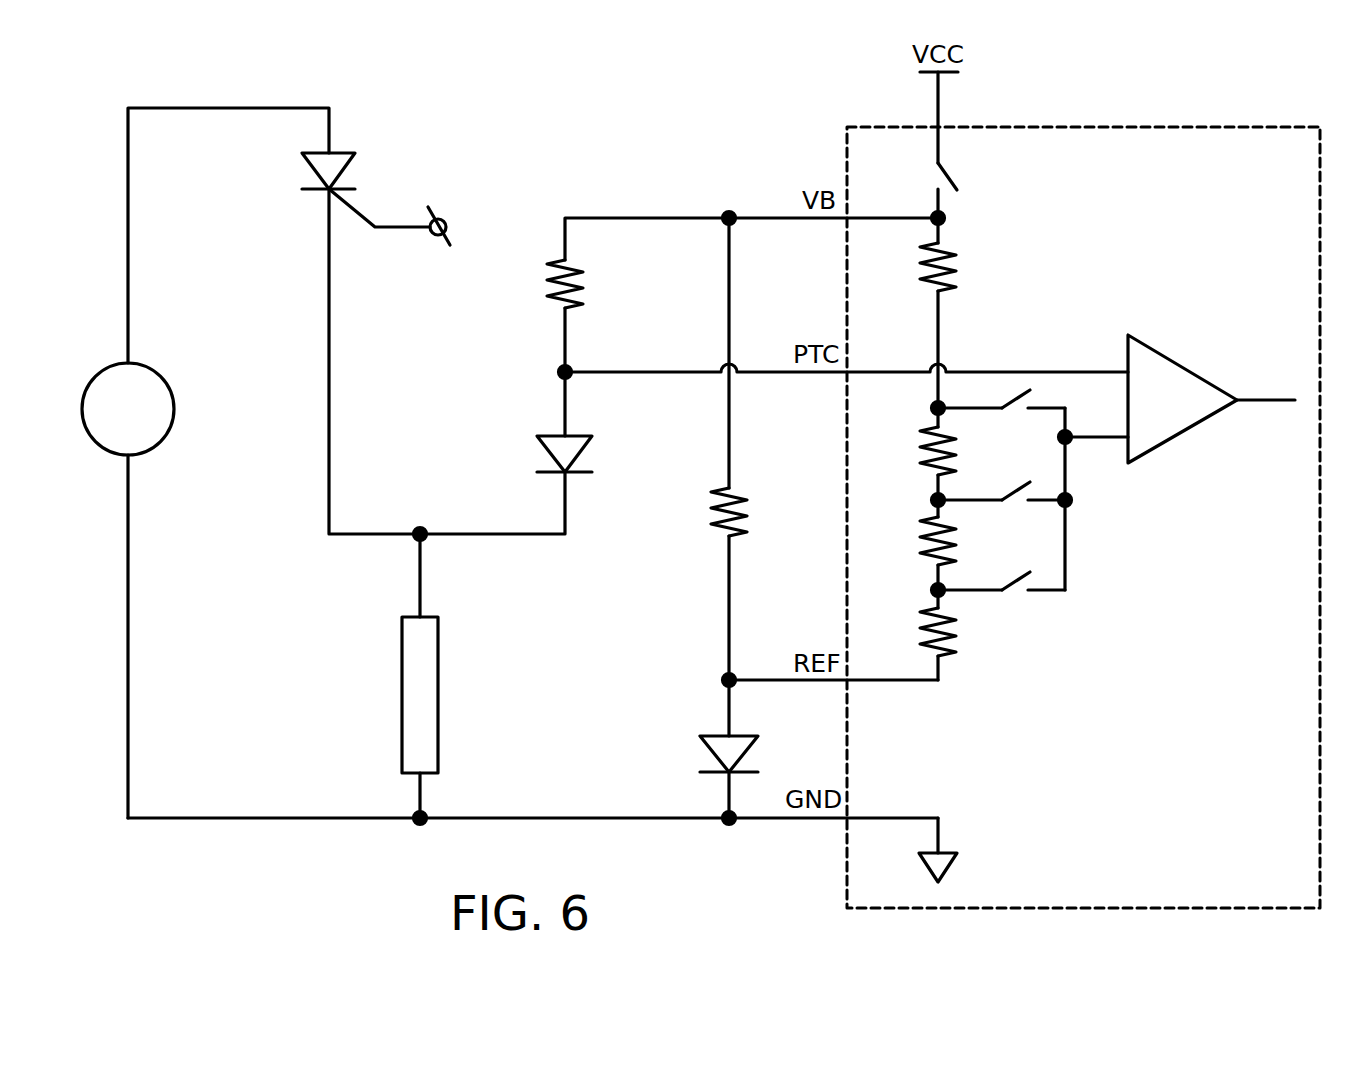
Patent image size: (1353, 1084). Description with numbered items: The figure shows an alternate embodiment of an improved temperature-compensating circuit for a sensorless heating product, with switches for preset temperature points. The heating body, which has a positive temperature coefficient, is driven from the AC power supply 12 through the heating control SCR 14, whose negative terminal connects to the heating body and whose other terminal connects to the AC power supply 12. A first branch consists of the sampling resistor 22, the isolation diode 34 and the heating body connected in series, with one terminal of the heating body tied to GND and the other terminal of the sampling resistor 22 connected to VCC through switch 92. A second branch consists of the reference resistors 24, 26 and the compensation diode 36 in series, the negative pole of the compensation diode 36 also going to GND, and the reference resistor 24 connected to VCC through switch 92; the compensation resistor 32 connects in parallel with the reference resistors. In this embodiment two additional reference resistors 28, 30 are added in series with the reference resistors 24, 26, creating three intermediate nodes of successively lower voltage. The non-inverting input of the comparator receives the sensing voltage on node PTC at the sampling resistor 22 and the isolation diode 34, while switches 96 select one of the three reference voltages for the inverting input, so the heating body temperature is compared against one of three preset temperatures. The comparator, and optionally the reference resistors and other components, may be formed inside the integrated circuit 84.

The AC power supply 12 is at (169, 375).
The heating control SCR 14 is at (345, 152).
The sampling resistor 22 is at (583, 304).
The reference resistor 24 is at (945, 287).
The reference resistor 26 is at (982, 445).
The reference resistor 28 is at (982, 535).
The reference resistor 30 is at (982, 632).
The compensation resistor 32 is at (747, 532).
The isolation diode 34 is at (592, 436).
The compensation diode 36 is at (758, 736).
The integrated circuit 84 is at (1136, 750).
The switch 92 is at (950, 176).
The switches 96 is at (1020, 614).